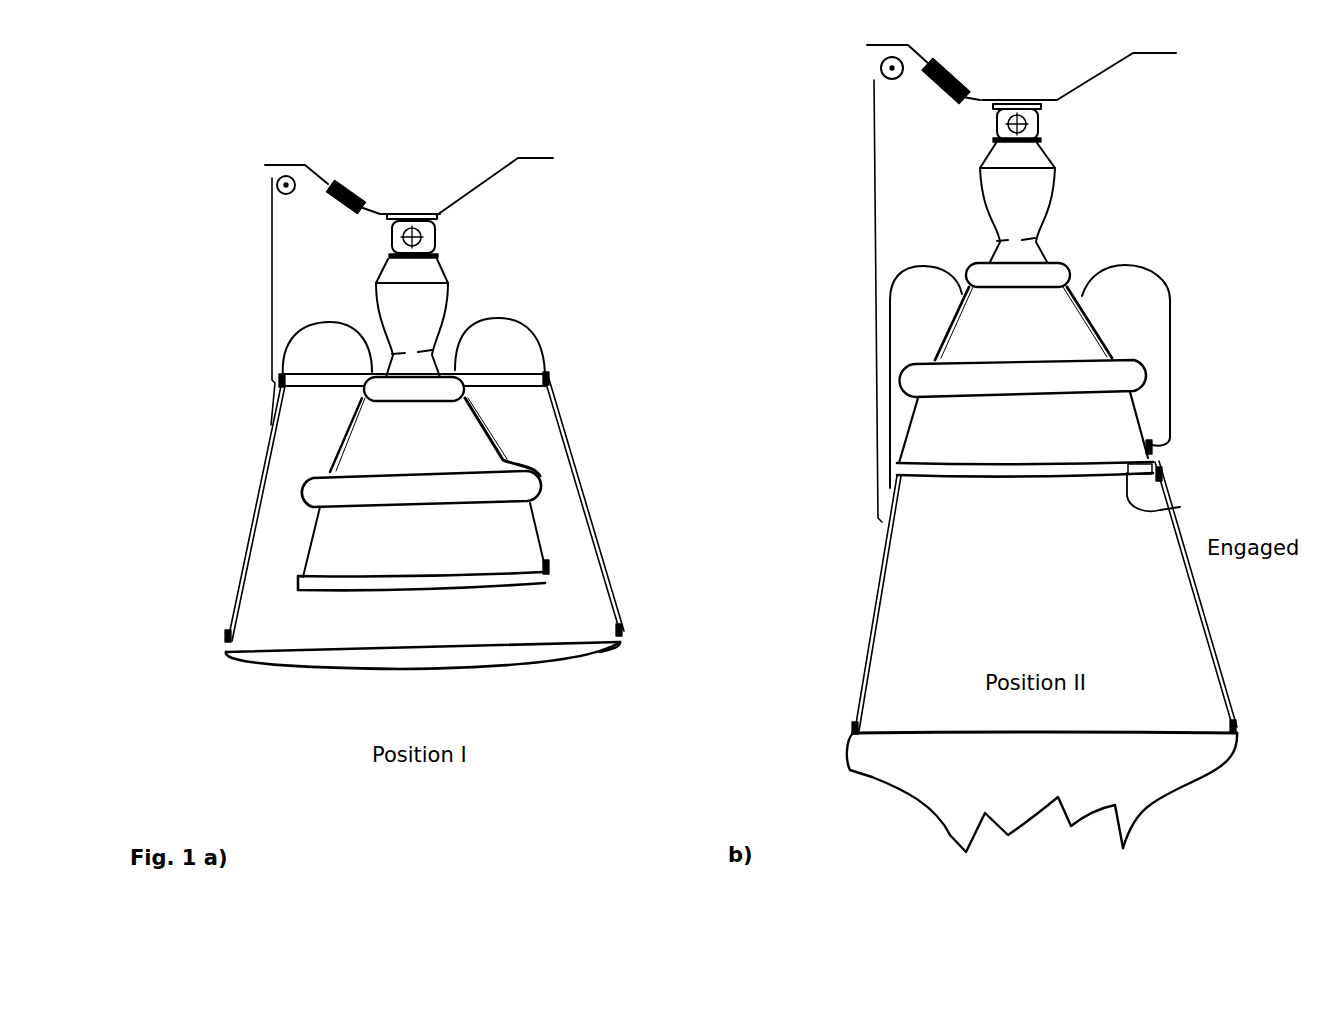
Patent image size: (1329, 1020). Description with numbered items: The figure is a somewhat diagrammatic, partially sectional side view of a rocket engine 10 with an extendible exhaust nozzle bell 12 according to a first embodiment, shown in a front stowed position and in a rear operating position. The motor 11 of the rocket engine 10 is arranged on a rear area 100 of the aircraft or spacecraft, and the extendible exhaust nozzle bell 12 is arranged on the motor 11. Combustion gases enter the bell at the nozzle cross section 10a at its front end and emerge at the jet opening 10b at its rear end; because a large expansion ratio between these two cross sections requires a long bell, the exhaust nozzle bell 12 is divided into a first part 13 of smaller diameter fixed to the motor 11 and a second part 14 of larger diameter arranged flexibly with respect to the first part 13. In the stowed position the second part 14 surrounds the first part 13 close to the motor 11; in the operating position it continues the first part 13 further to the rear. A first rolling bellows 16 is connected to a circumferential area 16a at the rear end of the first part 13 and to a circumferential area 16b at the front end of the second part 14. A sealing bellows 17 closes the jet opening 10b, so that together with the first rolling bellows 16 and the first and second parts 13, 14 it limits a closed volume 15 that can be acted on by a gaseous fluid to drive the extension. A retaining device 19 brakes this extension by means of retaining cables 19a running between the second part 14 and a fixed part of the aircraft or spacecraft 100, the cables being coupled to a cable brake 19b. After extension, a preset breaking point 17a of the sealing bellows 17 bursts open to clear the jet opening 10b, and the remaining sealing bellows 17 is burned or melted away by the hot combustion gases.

The rear area of the aircraft or spacecraft 100 is at (620, 201).
The rocket engine 10 is at (236, 361).
The nozzle cross section 10a is at (420, 352).
The jet opening 10b is at (731, 711).
The motor 11 is at (432, 270).
The extendible exhaust nozzle bell 12 is at (662, 531).
The first part of the exhaust nozzle bell 13 is at (345, 537).
The second part of the exhaust nozzle bell 14 is at (573, 470).
The closed volume 15 is at (298, 615).
The first rolling bellows 16 is at (533, 330).
The circumferential area of the first part 16a is at (558, 568).
The circumferential area of the second part 16b is at (550, 380).
The sealing bellows 17 is at (578, 660).
The preset breaking point 17a is at (1120, 820).
The retaining device 19 is at (258, 221).
The retaining cable 19a is at (270, 272).
The cable brake 19b is at (350, 192).